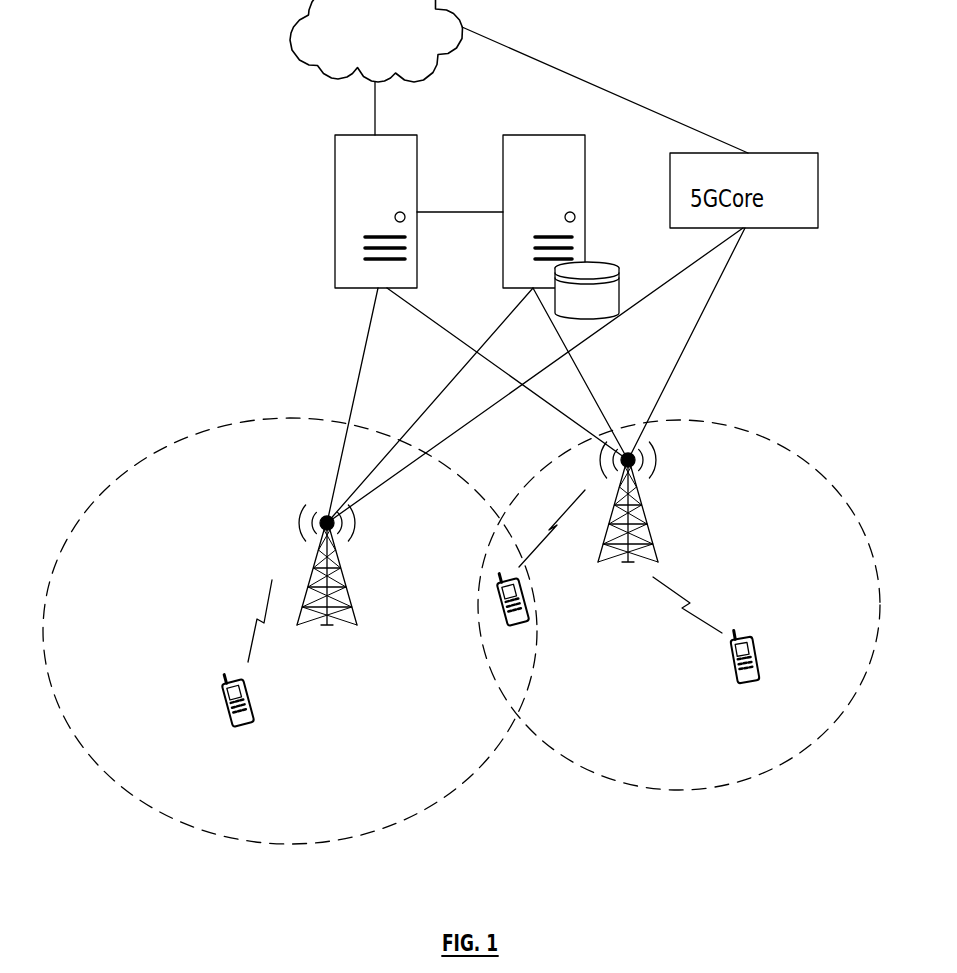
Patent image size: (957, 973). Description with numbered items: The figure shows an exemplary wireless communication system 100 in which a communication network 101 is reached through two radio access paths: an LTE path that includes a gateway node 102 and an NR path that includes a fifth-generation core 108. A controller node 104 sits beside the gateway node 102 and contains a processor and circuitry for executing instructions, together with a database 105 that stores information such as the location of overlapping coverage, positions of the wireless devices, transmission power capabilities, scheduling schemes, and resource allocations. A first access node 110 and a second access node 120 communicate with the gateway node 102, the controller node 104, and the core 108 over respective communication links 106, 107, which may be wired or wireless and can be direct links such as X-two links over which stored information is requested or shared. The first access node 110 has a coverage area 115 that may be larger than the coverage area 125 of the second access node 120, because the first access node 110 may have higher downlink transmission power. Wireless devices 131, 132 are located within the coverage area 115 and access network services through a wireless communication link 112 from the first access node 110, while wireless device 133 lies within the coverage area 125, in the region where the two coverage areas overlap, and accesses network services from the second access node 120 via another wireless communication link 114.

The system 100 is at (552, 46).
The communication network 101 is at (358, 38).
The gateway node 102 is at (335, 175).
The controller node 104 is at (587, 190).
The database 105 is at (620, 260).
The communication link 106 is at (438, 327).
The communication link 107 is at (402, 377).
The 5G core 108 is at (768, 211).
The first access node 110 is at (275, 532).
The wireless communication link 112 is at (262, 622).
The wireless communication link 114 is at (687, 590).
The coverage area 115 is at (288, 843).
The second access node 120 is at (648, 538).
The coverage area 125 is at (678, 792).
The wireless device 131 is at (237, 727).
The wireless device 132 is at (735, 677).
The wireless device 133 is at (518, 627).